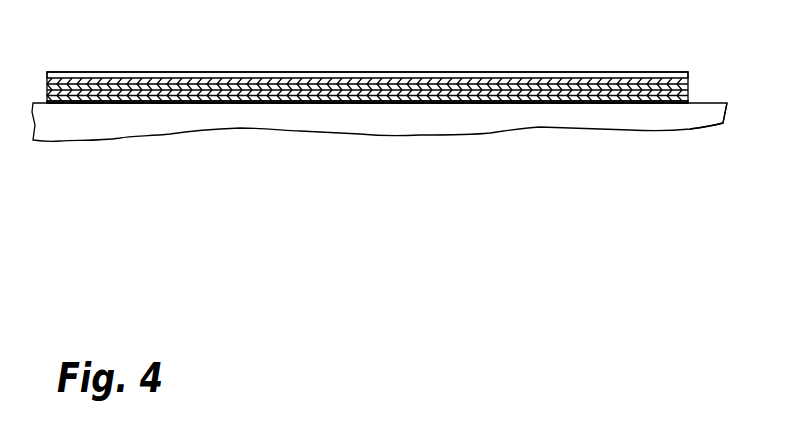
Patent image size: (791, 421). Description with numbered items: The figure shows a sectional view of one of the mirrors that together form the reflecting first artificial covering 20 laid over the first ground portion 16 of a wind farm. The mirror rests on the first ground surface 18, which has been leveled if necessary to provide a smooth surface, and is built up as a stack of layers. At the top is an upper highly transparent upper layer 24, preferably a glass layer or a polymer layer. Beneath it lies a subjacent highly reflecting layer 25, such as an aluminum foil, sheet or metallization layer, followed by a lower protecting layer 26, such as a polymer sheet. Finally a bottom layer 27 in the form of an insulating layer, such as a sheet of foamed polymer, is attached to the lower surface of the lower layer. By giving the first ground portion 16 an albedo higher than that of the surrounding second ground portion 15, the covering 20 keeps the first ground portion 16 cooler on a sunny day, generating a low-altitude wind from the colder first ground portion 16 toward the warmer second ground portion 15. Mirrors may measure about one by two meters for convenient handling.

The reflecting first artificial covering 20 is at (263, 60).
The upper layer 24 is at (47, 77).
The highly reflecting layer 25 is at (58, 88).
The lower protecting layer 26 is at (85, 92).
The bottom layer 27 is at (118, 98).
The first ground surface 18 is at (347, 99).
The first ground portion 16 is at (490, 122).
The second ground portion 15 is at (718, 101).